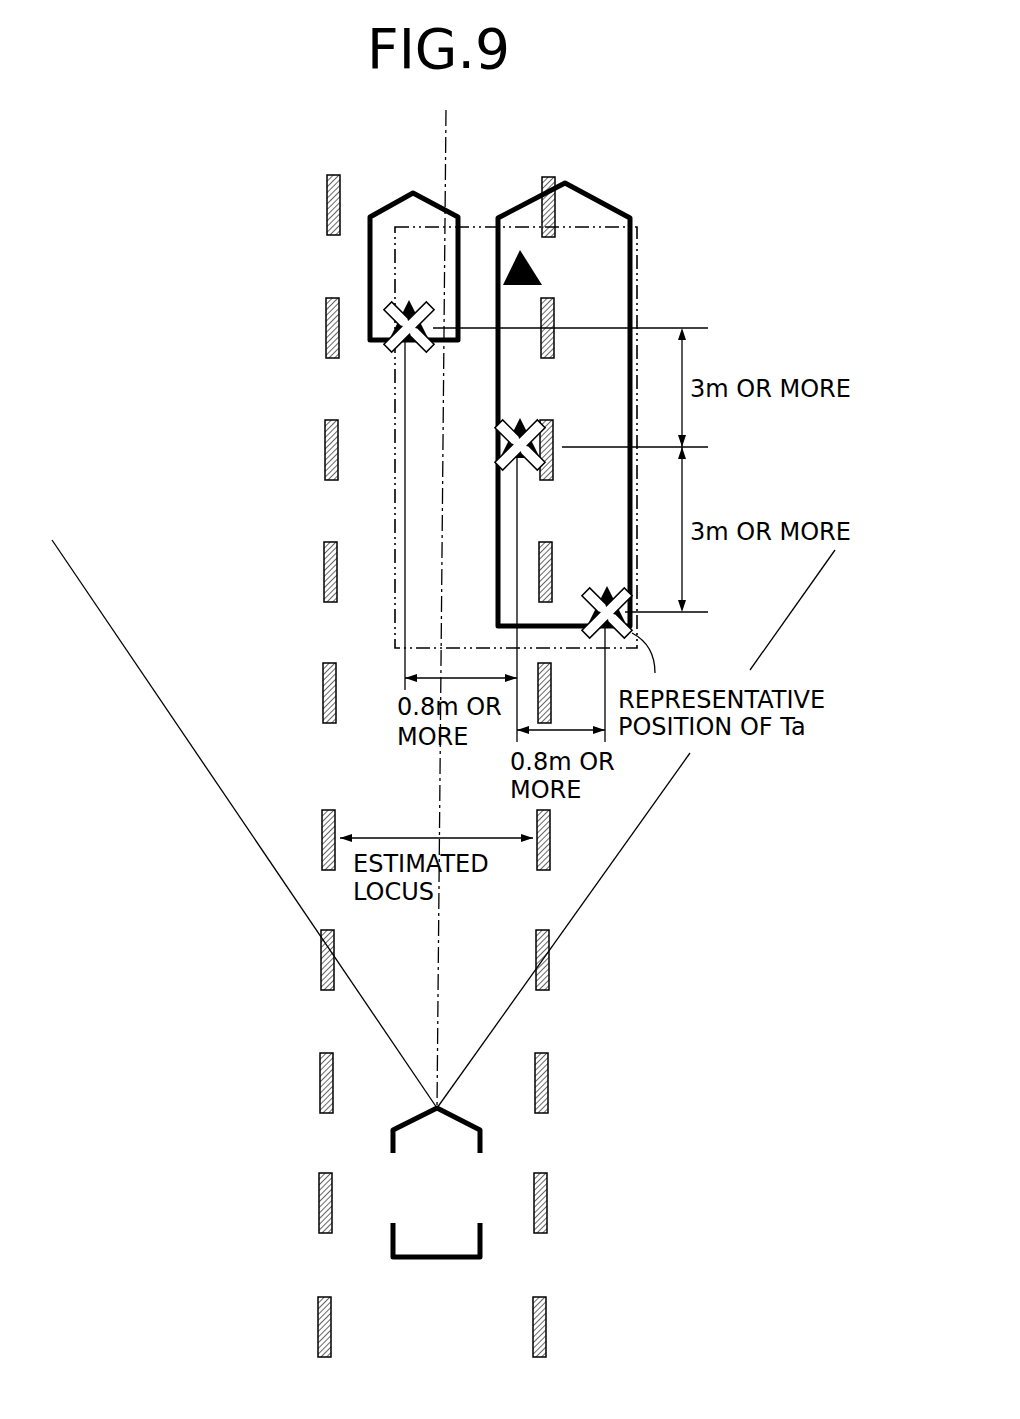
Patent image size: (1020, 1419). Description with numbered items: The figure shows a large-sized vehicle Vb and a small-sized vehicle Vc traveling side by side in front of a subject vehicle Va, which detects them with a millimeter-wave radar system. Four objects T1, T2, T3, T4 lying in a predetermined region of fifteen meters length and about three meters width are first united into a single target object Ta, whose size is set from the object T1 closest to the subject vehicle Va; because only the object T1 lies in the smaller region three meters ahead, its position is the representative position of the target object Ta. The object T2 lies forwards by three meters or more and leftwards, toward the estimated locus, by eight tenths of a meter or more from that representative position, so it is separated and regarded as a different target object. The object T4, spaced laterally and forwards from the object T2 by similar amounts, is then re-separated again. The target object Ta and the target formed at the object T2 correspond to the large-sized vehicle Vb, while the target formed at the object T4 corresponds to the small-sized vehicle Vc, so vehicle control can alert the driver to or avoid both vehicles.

The subject vehicle Va is at (425, 1242).
The large-sized vehicle Vb is at (597, 198).
The small-sized vehicle Vc is at (390, 204).
The target object Ta is at (723, 258).
The object T1 is at (605, 592).
The object T2 is at (525, 433).
The object T3 is at (533, 272).
The object T4 is at (403, 312).